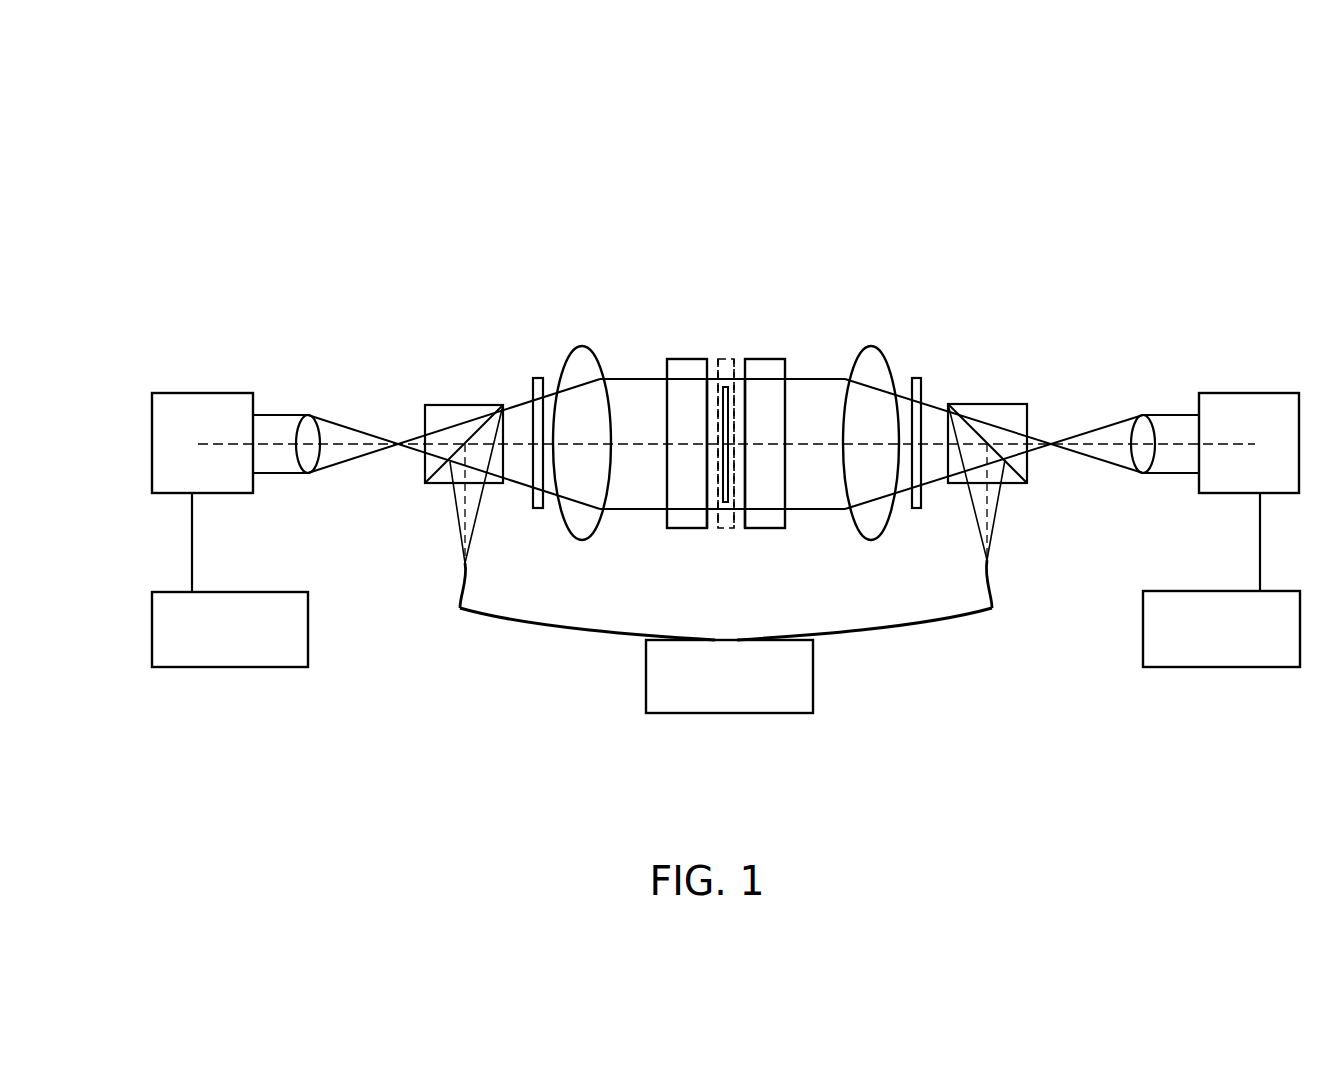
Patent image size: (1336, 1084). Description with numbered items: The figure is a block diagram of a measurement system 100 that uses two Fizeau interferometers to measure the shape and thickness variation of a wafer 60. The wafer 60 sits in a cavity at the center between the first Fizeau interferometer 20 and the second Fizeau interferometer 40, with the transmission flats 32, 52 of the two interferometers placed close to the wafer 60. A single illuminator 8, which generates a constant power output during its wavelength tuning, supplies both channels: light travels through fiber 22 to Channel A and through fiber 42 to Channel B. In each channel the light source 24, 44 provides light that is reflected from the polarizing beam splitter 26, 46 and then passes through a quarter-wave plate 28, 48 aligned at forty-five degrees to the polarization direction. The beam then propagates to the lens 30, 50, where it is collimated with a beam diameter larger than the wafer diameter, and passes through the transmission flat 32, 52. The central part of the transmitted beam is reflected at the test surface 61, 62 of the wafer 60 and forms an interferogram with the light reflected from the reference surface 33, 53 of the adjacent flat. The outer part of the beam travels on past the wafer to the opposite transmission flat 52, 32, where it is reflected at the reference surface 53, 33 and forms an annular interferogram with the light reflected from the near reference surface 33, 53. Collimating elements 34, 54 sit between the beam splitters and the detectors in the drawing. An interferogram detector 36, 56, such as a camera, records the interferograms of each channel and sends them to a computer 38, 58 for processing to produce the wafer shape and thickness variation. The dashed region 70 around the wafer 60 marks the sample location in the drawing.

The measurement system 100 is at (208, 232).
The Fizeau interferometer 20 is at (302, 275).
The Fizeau interferometer 40 is at (1149, 272).
The illuminator 8 is at (813, 695).
The fiber 22 is at (458, 612).
The light source 24 is at (465, 560).
The polarizing beam splitter 26 is at (455, 408).
The quarter-wave plate 28 is at (535, 378).
The lens 30 is at (596, 347).
The transmission flat 32 is at (683, 370).
The reference surface 33 is at (710, 520).
The camera lens channel A 34 is at (307, 418).
The interferogram detector 36 is at (205, 392).
The computer 38 is at (240, 595).
The fiber 42 is at (993, 610).
The light source 44 is at (987, 558).
The polarizing beam splitter 46 is at (1027, 404).
The quarter-wave plate 48 is at (952, 401).
The lens 50 is at (883, 406).
The transmission flat 52 is at (773, 400).
The reference surface 53 is at (742, 522).
The camera lens channel B 54 is at (1157, 437).
The interferogram detector 56 is at (1250, 393).
The computer 58 is at (1165, 591).
The wafer 60 is at (728, 505).
The test surface 61 is at (723, 425).
The test surface 62 is at (731, 407).
The sample region 70 is at (733, 525).